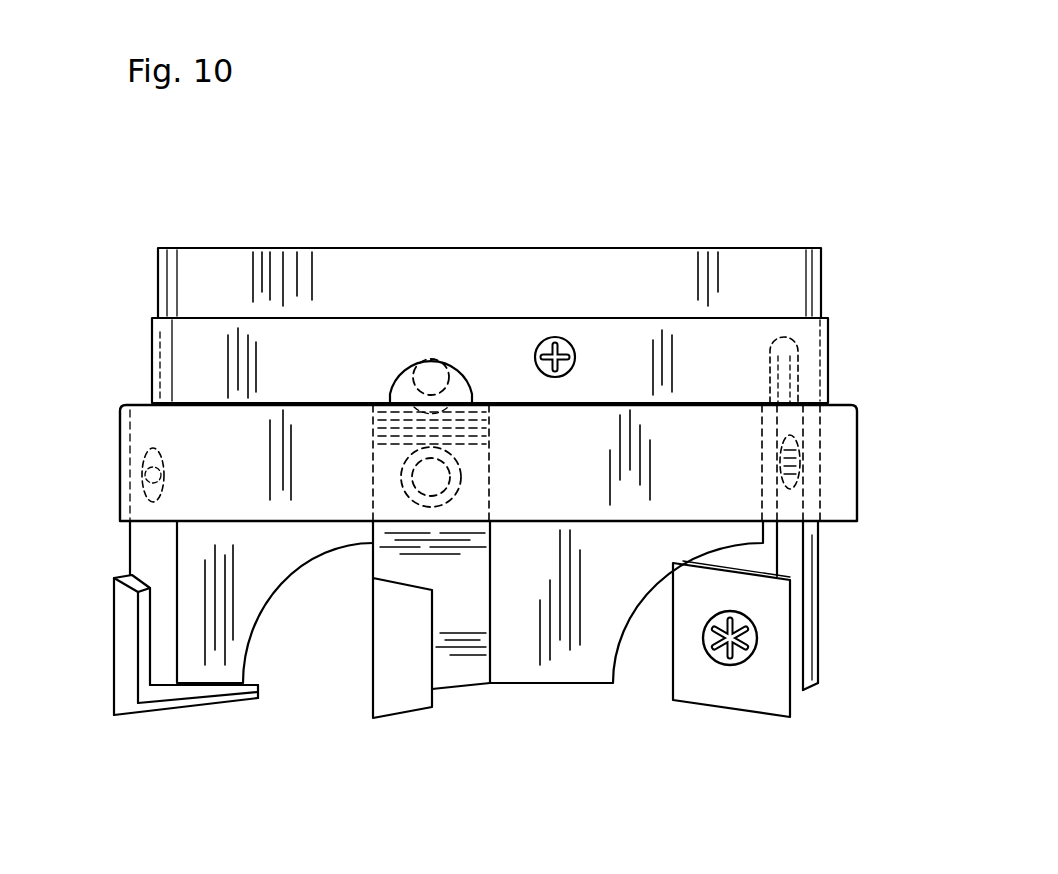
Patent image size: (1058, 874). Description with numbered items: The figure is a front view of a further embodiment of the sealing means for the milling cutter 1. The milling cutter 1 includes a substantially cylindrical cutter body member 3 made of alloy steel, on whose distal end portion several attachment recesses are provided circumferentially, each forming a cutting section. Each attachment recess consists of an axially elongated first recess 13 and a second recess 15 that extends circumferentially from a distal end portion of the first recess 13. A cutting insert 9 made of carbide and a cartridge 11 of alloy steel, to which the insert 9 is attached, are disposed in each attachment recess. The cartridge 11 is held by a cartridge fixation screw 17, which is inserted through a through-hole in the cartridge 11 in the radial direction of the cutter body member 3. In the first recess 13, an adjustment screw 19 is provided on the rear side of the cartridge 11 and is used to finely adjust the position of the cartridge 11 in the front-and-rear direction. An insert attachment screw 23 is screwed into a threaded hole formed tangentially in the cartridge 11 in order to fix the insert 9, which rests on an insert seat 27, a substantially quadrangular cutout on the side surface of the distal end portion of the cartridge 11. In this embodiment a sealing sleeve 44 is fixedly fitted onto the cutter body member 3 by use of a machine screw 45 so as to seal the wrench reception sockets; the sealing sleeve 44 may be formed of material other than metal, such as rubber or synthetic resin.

The milling cutter 1 is at (798, 190).
The cutter body member 3 is at (371, 248).
The cutting insert 9 is at (128, 695).
The cartridge 11 is at (148, 552).
The first recess 13 is at (478, 592).
The second recess 15 is at (307, 668).
The cartridge fixation screw 17 is at (118, 468).
The adjustment screw 19 is at (433, 336).
The insert attachment screw 23 is at (716, 668).
The insert seat 27 is at (445, 680).
The sealing sleeve 44 is at (843, 473).
The machine screw 45 is at (555, 337).